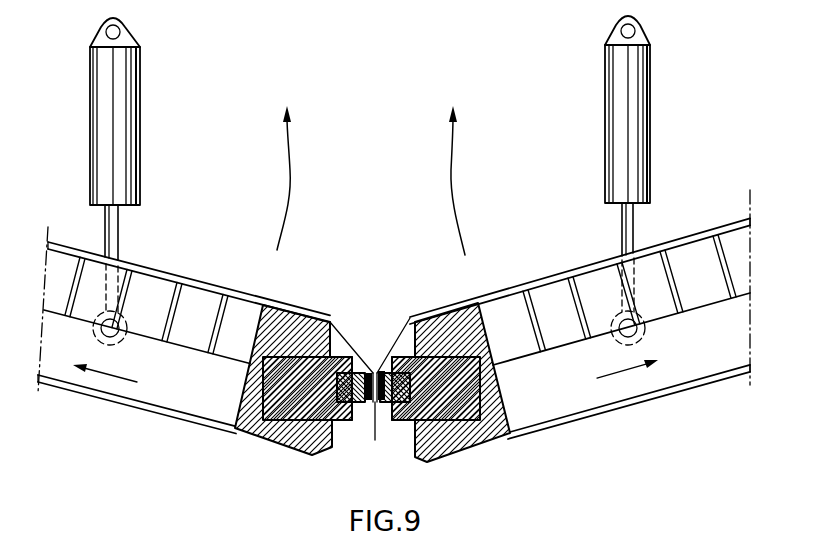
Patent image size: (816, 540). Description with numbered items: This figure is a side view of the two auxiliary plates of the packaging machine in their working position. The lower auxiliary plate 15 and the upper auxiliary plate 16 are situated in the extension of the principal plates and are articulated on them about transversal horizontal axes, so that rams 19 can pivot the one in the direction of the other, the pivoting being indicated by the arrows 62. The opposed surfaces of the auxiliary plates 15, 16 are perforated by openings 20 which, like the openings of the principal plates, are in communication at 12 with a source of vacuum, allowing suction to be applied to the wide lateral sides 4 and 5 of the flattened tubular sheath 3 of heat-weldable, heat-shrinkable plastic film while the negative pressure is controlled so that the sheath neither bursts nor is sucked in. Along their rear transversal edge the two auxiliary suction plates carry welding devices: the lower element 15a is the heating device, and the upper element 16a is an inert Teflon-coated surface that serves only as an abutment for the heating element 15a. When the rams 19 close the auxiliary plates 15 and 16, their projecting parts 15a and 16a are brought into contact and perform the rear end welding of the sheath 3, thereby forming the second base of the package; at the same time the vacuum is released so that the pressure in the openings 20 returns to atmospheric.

The flattened tubular sheath 3 is at (381, 435).
The wide adjacent side of the sheath 4 is at (198, 276).
The wide adjacent side of the sheath 5 is at (468, 293).
The communication with the vacuum source 12 is at (365, 378).
The lower auxiliary plate 15 is at (550, 362).
The heating device 15a is at (385, 356).
The upper auxiliary plate 16 is at (243, 299).
The inert Teflon-coated surface 16a is at (363, 356).
The ram 19 is at (125, 134).
The opening 20 is at (148, 297).
The arrow 62 is at (287, 185).